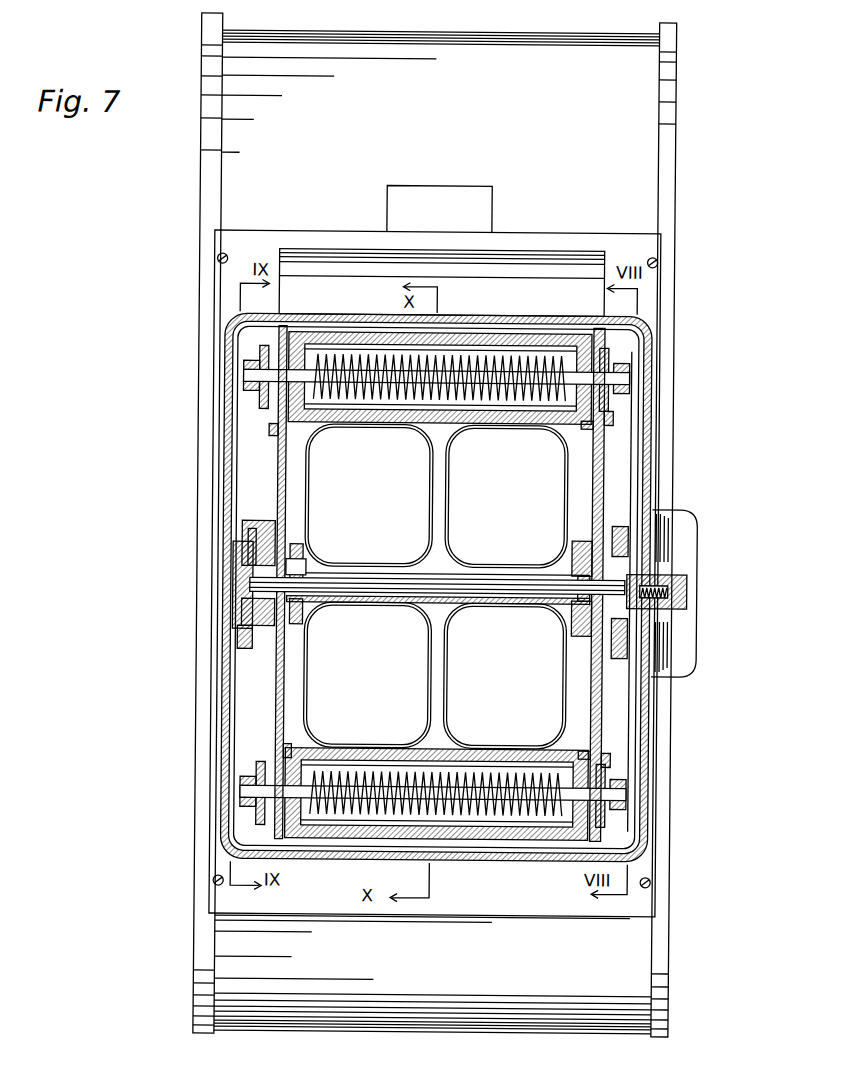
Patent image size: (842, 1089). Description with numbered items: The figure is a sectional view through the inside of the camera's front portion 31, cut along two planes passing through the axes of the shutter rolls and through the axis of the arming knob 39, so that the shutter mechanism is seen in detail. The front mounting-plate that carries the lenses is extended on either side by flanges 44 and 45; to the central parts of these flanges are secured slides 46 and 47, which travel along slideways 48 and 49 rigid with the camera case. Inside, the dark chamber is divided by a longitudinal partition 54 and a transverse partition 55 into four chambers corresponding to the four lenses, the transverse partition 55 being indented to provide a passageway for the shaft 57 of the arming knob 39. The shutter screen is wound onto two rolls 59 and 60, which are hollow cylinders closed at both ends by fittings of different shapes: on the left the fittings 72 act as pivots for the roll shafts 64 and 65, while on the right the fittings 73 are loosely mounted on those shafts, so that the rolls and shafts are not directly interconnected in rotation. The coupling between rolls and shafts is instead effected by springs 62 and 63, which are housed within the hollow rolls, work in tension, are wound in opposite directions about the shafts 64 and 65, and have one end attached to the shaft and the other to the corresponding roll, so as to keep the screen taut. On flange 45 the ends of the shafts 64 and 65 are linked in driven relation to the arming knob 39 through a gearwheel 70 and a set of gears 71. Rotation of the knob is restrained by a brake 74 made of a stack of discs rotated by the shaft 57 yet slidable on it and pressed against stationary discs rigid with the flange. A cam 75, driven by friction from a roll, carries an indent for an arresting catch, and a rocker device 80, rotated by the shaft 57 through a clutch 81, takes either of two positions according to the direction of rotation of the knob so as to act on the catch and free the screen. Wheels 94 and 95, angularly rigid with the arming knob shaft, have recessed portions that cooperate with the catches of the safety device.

The front portion 31 is at (645, 146).
The arming knob 39 is at (693, 538).
The flange 44 is at (285, 675).
The flange 45 is at (592, 668).
The slide 46 is at (250, 650).
The slide 47 is at (612, 657).
The slideway 48 is at (238, 577).
The slideway 49 is at (633, 530).
The longitudinal partition 54 is at (445, 512).
The transverse partition 55 is at (482, 597).
The shaft 57 is at (416, 590).
The roll 59 is at (533, 340).
The roll 60 is at (472, 760).
The spring 62 is at (368, 770).
The spring 63 is at (363, 368).
The roll shaft 64 is at (510, 775).
The roll shaft 65 is at (478, 371).
The gearwheel 70 is at (590, 655).
The set of gears 71 is at (604, 415).
The fitting 72 is at (290, 758).
The fitting 73 is at (582, 428).
The brake 74 is at (575, 632).
The cam 75 is at (272, 433).
The rocker device 80 is at (265, 522).
The clutch 81 is at (254, 530).
The wheel 94 is at (305, 560).
The wheel 95 is at (293, 545).